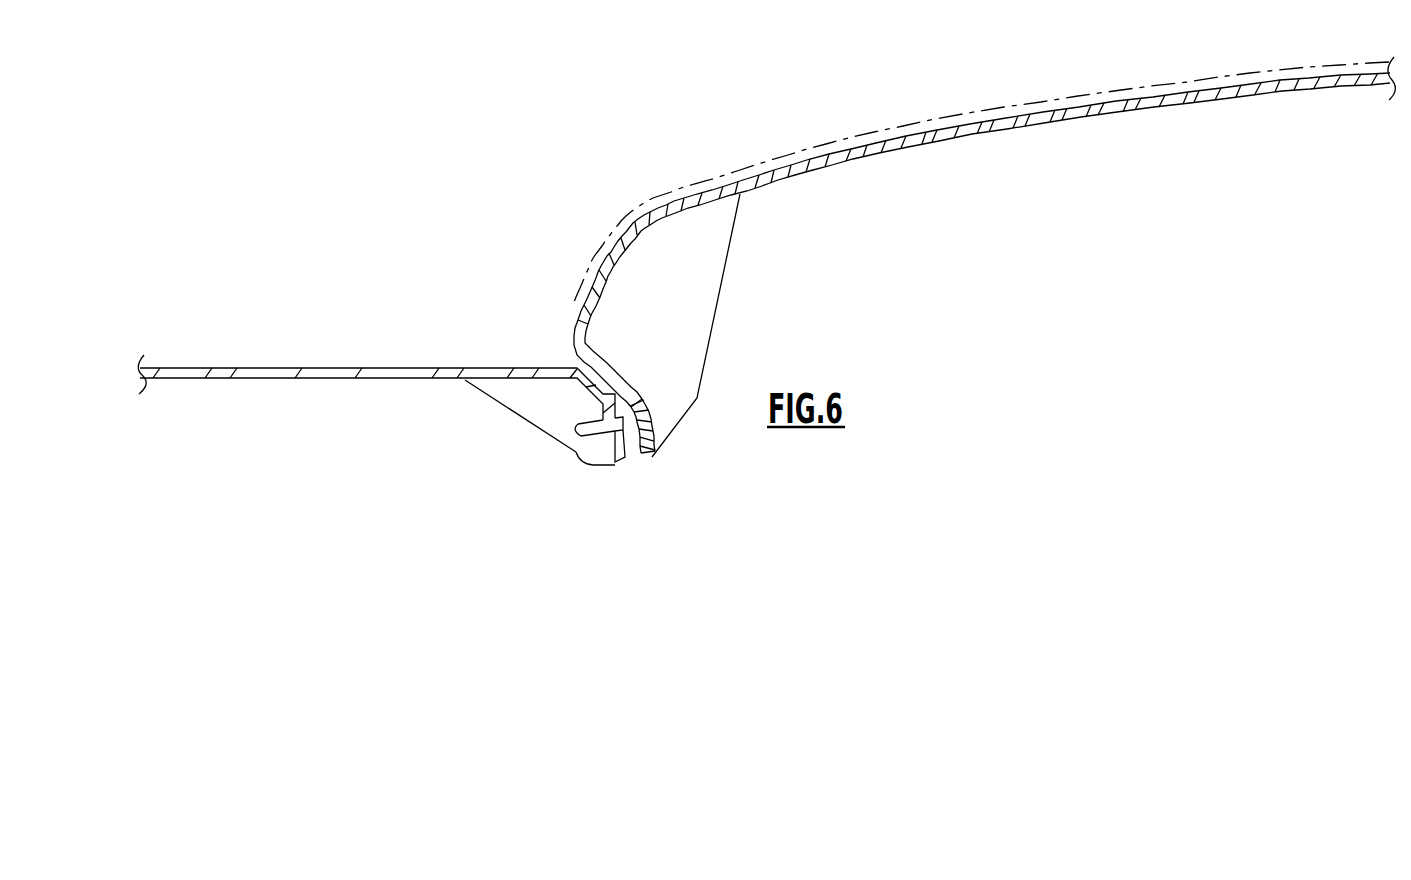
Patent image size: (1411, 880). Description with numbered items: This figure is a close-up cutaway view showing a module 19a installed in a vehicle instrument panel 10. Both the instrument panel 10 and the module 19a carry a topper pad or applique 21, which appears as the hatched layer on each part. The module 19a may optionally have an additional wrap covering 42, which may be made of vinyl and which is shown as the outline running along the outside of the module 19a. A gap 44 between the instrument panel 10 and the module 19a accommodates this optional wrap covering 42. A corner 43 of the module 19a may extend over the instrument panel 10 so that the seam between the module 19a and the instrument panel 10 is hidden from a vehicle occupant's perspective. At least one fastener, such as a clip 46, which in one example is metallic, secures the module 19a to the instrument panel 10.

The instrument panel 10 is at (207, 458).
The module 19a is at (1313, 185).
The topper pad or applique 21 is at (983, 138).
The wrap covering 42 is at (838, 141).
The corner 43 is at (557, 333).
The gap 44 is at (632, 453).
The clip 46 is at (586, 440).